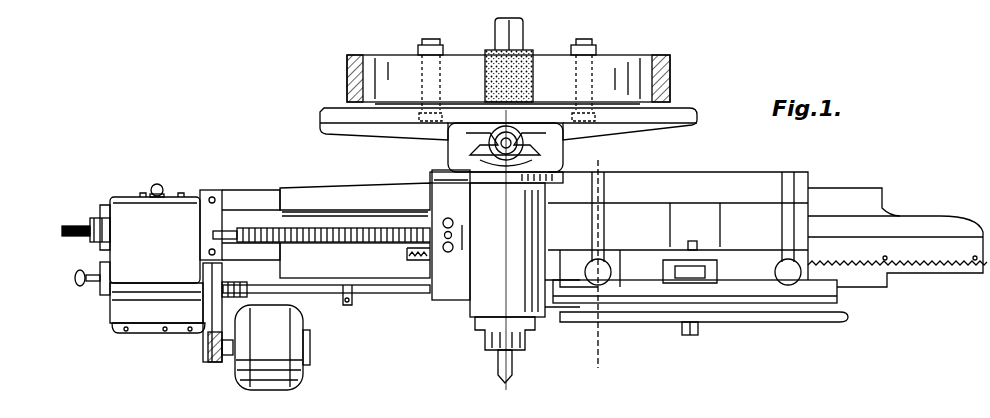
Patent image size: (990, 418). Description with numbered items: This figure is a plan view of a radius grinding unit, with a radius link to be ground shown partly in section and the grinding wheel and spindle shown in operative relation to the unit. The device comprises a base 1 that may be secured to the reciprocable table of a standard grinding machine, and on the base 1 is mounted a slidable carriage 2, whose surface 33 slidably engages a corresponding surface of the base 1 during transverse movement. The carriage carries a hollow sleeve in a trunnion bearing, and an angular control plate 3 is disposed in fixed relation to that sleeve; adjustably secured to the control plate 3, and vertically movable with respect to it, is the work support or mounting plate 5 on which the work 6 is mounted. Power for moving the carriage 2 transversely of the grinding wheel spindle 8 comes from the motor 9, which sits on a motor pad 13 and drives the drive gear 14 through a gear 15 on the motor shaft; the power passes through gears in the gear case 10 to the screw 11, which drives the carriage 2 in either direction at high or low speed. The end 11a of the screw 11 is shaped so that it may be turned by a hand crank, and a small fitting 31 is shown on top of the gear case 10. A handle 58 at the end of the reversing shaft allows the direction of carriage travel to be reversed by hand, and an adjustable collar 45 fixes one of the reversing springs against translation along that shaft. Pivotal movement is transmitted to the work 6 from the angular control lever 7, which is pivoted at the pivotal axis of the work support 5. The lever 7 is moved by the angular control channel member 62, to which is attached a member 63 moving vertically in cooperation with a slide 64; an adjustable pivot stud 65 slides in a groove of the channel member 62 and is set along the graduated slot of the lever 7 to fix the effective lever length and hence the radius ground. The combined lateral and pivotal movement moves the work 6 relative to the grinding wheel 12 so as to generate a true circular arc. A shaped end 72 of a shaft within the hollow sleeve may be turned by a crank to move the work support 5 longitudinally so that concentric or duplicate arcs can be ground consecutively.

The base 1 is at (905, 229).
The carriage 2 is at (808, 182).
The angular control plate 3 is at (448, 163).
The work support 5 is at (330, 112).
The work 6 is at (670, 76).
The angular control lever 7 is at (598, 160).
The grinding wheel spindle 8 is at (498, 30).
The motor 9 is at (243, 385).
The gear case 10 is at (130, 258).
The screw 11 is at (256, 226).
The end of the shaft 11a is at (68, 226).
The grinding wheel 12 is at (533, 62).
The motor pad 13 is at (300, 300).
The drive gear 14 is at (205, 338).
The gear 15 is at (215, 362).
The oil cup 31 is at (165, 184).
The surface 33 is at (876, 199).
The adjustable collar 45 is at (208, 273).
The handle 58 is at (74, 285).
The angular control channel member 62 is at (822, 292).
The member 63 is at (670, 270).
The slide 64 is at (688, 280).
The adjustable pivot stud 65 is at (696, 338).
The shaped end 72 is at (497, 370).